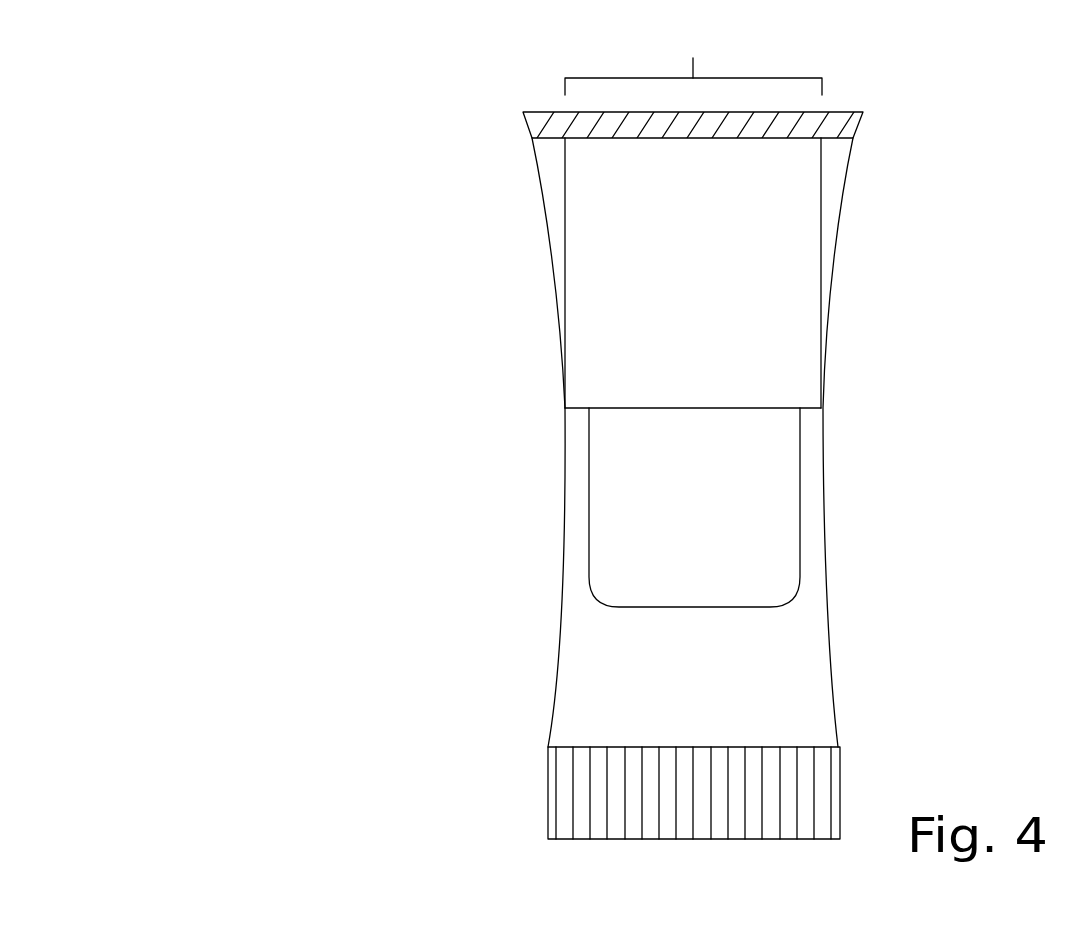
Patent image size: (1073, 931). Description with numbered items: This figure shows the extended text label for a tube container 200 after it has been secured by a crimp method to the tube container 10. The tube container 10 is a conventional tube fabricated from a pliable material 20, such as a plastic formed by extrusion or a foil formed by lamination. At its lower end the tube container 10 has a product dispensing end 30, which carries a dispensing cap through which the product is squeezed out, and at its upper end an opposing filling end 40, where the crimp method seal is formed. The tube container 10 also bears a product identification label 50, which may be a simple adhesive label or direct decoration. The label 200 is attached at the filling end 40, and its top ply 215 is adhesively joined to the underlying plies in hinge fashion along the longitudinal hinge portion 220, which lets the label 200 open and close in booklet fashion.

The extended text label for a tube container 200 is at (890, 407).
The filling end 40 is at (523, 112).
The longitudinal hinge portion 220 is at (693, 60).
The tube container 10 is at (714, 708).
The pliable material 20 is at (602, 652).
The top ply 215 is at (585, 363).
The product identification label 50 is at (768, 518).
The product dispensing end 30 is at (548, 788).